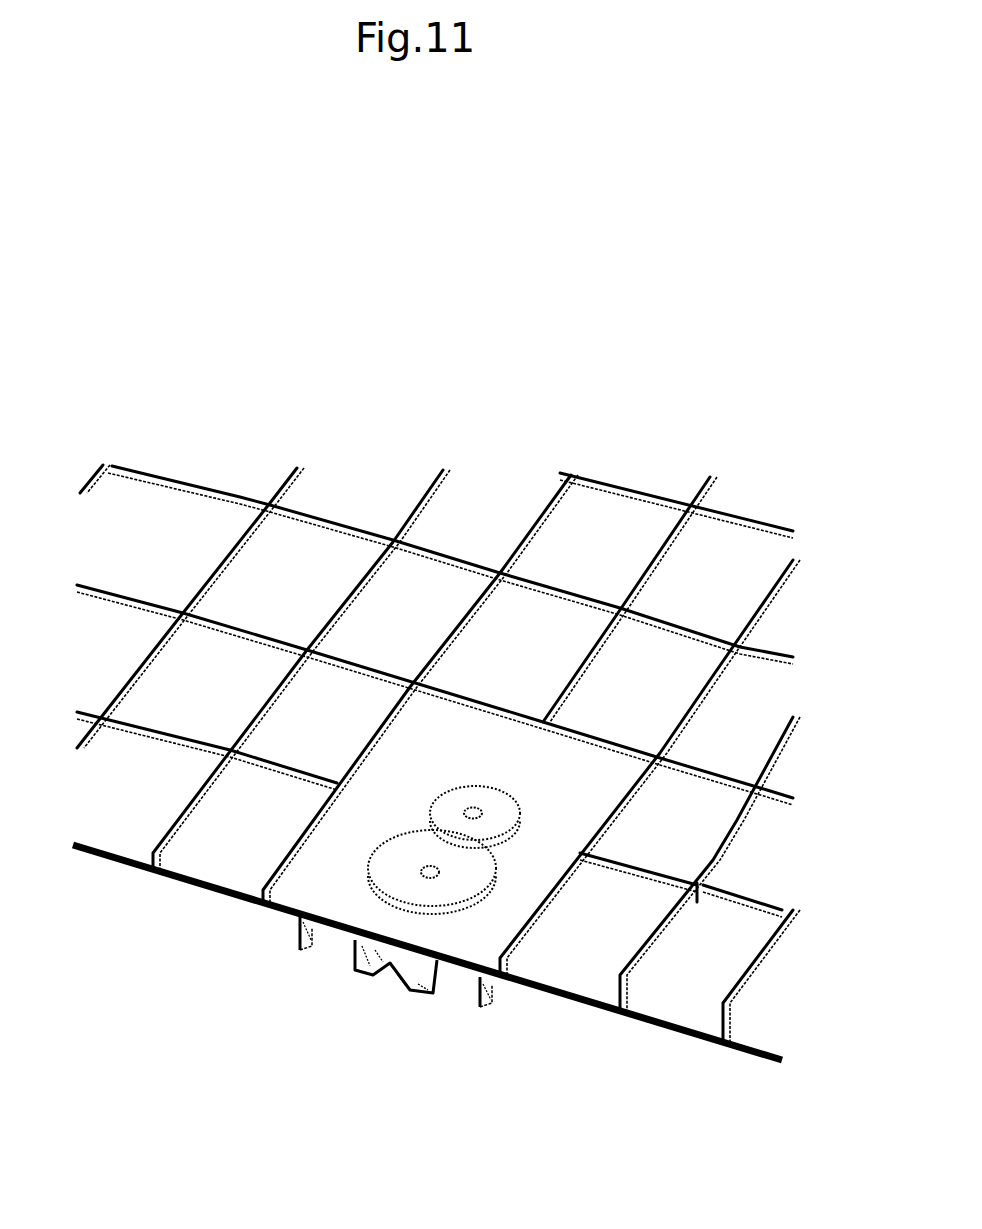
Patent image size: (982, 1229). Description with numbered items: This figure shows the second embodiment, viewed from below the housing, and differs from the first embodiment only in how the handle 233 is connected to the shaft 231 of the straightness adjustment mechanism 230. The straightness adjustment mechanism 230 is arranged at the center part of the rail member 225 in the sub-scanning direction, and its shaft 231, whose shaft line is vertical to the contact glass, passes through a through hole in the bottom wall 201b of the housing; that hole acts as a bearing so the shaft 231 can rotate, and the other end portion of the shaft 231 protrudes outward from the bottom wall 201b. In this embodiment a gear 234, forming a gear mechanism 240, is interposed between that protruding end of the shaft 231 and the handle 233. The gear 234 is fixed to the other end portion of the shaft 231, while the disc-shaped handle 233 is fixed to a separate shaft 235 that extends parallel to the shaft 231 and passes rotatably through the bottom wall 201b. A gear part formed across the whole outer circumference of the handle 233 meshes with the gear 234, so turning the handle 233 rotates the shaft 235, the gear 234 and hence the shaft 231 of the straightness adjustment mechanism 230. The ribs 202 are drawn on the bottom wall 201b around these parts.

The bottom wall 201b is at (137, 517).
The ribs 202 is at (700, 690).
The rail member 225 is at (427, 997).
The straightness adjustment mechanism 230 is at (421, 870).
The shaft 231 is at (470, 812).
The handle 233 is at (368, 923).
The gear 234 is at (505, 786).
The shaft 235 is at (427, 871).
The gear mechanism 240 is at (511, 786).